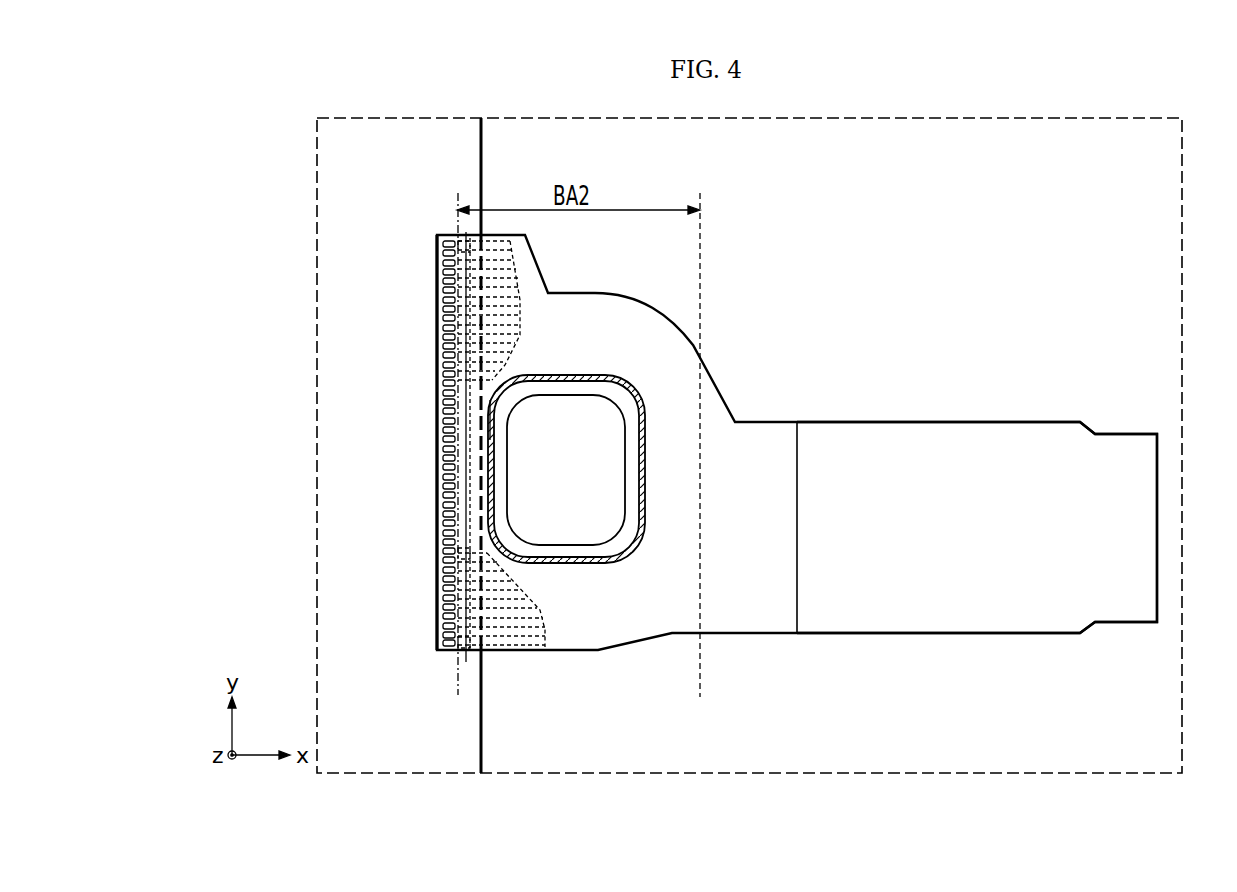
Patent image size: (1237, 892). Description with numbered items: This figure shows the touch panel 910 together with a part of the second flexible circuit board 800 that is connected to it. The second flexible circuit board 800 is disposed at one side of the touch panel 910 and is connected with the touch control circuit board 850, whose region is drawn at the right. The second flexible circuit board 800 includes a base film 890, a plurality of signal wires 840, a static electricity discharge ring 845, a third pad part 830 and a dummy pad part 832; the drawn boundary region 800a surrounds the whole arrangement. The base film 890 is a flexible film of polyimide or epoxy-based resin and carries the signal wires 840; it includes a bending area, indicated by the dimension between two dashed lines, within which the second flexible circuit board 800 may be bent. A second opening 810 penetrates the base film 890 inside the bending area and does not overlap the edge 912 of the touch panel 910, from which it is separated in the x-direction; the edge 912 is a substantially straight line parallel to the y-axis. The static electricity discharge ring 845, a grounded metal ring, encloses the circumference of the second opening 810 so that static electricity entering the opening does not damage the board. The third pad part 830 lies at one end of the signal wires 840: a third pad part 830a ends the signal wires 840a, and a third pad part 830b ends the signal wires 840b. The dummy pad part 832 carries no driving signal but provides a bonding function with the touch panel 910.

The second flexible circuit board 800 is at (882, 222).
The bending area boundary region 800a is at (868, 118).
The second opening 810 is at (539, 515).
The third pad part 830 is at (334, 434).
The third pad part 830a is at (436, 311).
The third pad part 830b is at (436, 592).
The dummy pad part 832 is at (436, 471).
The signal wires 840 is at (371, 447).
The signal wires 840a is at (450, 236).
The signal wires 840b is at (457, 650).
The static electricity discharge ring 845 is at (476, 416).
The touch control circuit board 850 is at (952, 620).
The base film 890 is at (687, 620).
The touch panel 910 is at (462, 157).
The edge of the touch panel 912 is at (476, 460).